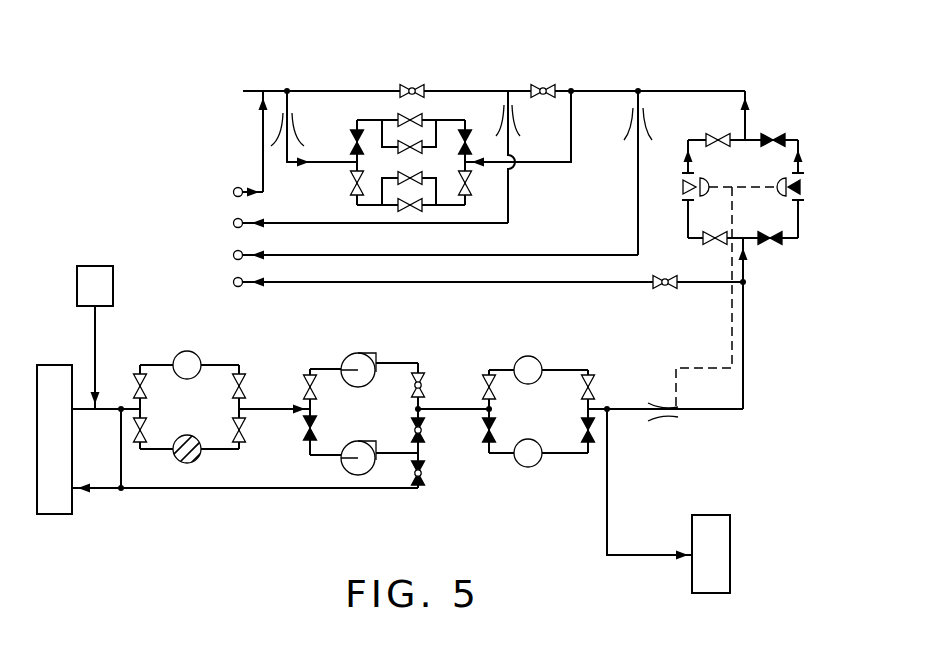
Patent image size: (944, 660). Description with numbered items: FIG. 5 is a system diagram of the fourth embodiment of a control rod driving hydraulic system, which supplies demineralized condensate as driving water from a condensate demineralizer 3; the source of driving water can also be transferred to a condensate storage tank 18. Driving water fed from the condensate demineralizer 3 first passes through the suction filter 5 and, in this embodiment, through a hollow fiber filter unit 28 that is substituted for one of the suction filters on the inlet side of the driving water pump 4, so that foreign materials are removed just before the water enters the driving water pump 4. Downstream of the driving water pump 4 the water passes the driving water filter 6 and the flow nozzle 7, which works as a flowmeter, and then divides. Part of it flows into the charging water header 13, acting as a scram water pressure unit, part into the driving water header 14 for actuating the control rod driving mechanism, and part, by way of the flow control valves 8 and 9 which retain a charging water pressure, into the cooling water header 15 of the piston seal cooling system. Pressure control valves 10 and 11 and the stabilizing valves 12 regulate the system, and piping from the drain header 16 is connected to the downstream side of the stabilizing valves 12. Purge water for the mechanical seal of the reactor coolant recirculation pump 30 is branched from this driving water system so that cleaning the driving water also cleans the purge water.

The condensate demineralizer 3 is at (97, 265).
The driving water pump 4 is at (364, 353).
The suction filter 5 is at (197, 353).
The driving water filter 6 is at (540, 357).
The flow nozzle 7 is at (681, 408).
The flow control valve 8 is at (682, 187).
The flow control valve 9 is at (812, 187).
The pressure control valve 10 is at (543, 85).
The pressure control valve 11 is at (412, 85).
The stabilizing valve 12 is at (413, 196).
The charging water header 13 is at (233, 282).
The driving water header 14 is at (233, 255).
The cooling water header 15 is at (233, 223).
The drain header 16 is at (233, 192).
The condensate storage tank 18 is at (72, 514).
The hollow fiber filter unit 28 is at (196, 461).
The reactor coolant recirculation pump 30 is at (727, 514).